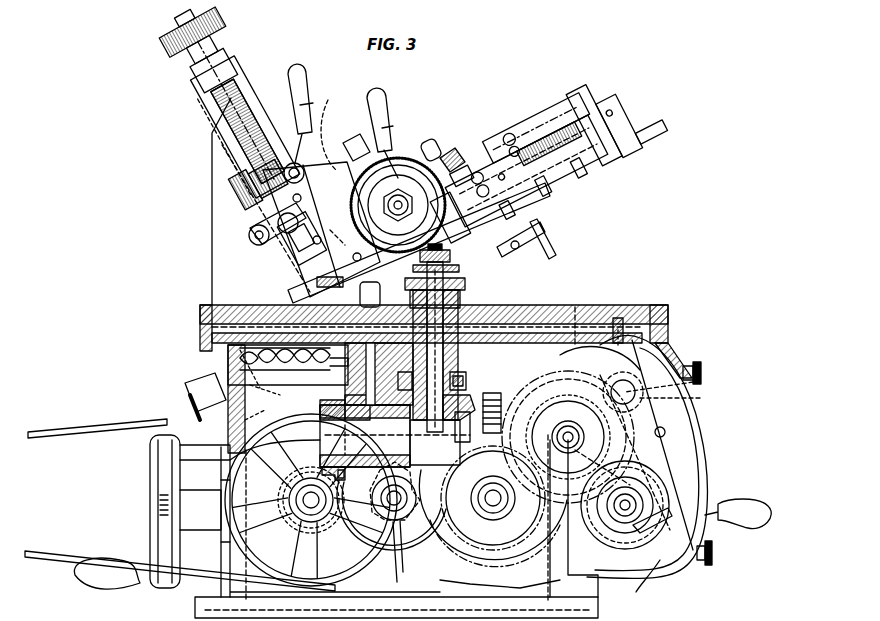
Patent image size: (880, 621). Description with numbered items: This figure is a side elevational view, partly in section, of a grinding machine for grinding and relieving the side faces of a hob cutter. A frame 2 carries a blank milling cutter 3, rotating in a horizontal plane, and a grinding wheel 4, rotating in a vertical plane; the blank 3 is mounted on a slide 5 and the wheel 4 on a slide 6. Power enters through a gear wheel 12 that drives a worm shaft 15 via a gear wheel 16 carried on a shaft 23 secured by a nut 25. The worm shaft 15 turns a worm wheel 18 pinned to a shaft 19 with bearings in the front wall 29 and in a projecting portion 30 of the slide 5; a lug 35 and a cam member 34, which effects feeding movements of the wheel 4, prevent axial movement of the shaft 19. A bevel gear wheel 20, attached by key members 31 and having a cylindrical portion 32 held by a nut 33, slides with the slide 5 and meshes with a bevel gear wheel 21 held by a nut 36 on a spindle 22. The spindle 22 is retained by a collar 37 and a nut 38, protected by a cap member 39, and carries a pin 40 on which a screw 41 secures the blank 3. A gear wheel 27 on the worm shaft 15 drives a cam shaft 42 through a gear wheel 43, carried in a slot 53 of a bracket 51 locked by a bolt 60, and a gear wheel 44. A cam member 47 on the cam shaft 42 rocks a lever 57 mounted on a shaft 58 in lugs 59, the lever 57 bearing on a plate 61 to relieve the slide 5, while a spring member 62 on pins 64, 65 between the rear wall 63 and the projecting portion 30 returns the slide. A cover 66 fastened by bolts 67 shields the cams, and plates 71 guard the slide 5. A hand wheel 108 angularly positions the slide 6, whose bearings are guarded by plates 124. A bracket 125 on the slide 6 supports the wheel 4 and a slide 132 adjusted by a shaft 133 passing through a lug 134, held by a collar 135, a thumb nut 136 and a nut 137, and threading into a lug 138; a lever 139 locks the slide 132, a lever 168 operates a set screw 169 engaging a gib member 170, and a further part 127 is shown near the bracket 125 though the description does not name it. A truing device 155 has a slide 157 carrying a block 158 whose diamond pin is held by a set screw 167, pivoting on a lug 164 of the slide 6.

The frame 2 is at (598, 608).
The blank milling cutter 3 is at (406, 234).
The grinding wheel 4 is at (402, 168).
The slide 5 is at (540, 305).
The slide 6 is at (226, 388).
The gear wheel 12 is at (338, 525).
The worm shaft 15 is at (498, 503).
The gear wheel 16 is at (392, 548).
The worm wheel 18 is at (433, 397).
The shaft 19 is at (493, 498).
The bevel gear wheel 20 is at (395, 436).
The bevel gear wheel 21 is at (440, 385).
The spindle 22 is at (454, 297).
The shaft 23 is at (415, 552).
The nut 25 is at (407, 560).
The gear wheel 27 is at (506, 548).
The front wall 29 is at (578, 305).
The projecting portion 30 is at (422, 423).
The key members 31 is at (325, 462).
The cylindrical portion 32 is at (435, 442).
The nut 33 is at (318, 409).
The cam member 34 is at (612, 390).
The lug 35 is at (490, 395).
The nut 36 is at (455, 431).
The collar 37 is at (466, 263).
The nut 38 is at (468, 380).
The cover or cap member 39 is at (450, 276).
The pin 40 is at (413, 268).
The screw 41 is at (435, 245).
The cam shaft 42 is at (640, 591).
The gear wheel 43 is at (573, 517).
The gear wheel 44 is at (630, 444).
The cam member 47 is at (700, 468).
The bracket 51 is at (540, 420).
The slot 53 is at (555, 405).
The lever 57 is at (686, 397).
The shaft 58 is at (679, 381).
The lugs 59 is at (600, 312).
The bolt 60 is at (655, 528).
The plate 61 is at (623, 320).
The spring member 62 is at (270, 396).
The rear wall 63 is at (258, 416).
The pin 64 is at (255, 373).
The pin 65 is at (300, 380).
The cover 66 is at (686, 362).
The bolts 67 is at (702, 370).
The side and end plates 71 is at (200, 318).
The hand wheel 108 is at (166, 588).
The side and end plates 124 is at (185, 406).
The bracket 125 is at (212, 238).
The lever 127 is at (274, 252).
The slide 132 is at (245, 92).
The shaft 133 is at (232, 124).
The lug 134 is at (198, 85).
The collar 135 is at (210, 100).
The thumb nut 136 is at (188, 60).
The nut 137 is at (172, 35).
The lug 138 is at (250, 112).
The lever 139 is at (310, 80).
The truing device 155 is at (524, 163).
The slide 157 is at (562, 104).
The block 158 is at (464, 198).
The lug 164 is at (450, 155).
The set screw 167 is at (432, 141).
The lever 168 is at (385, 104).
The set screw 169 is at (351, 135).
The gib member 170 is at (333, 129).